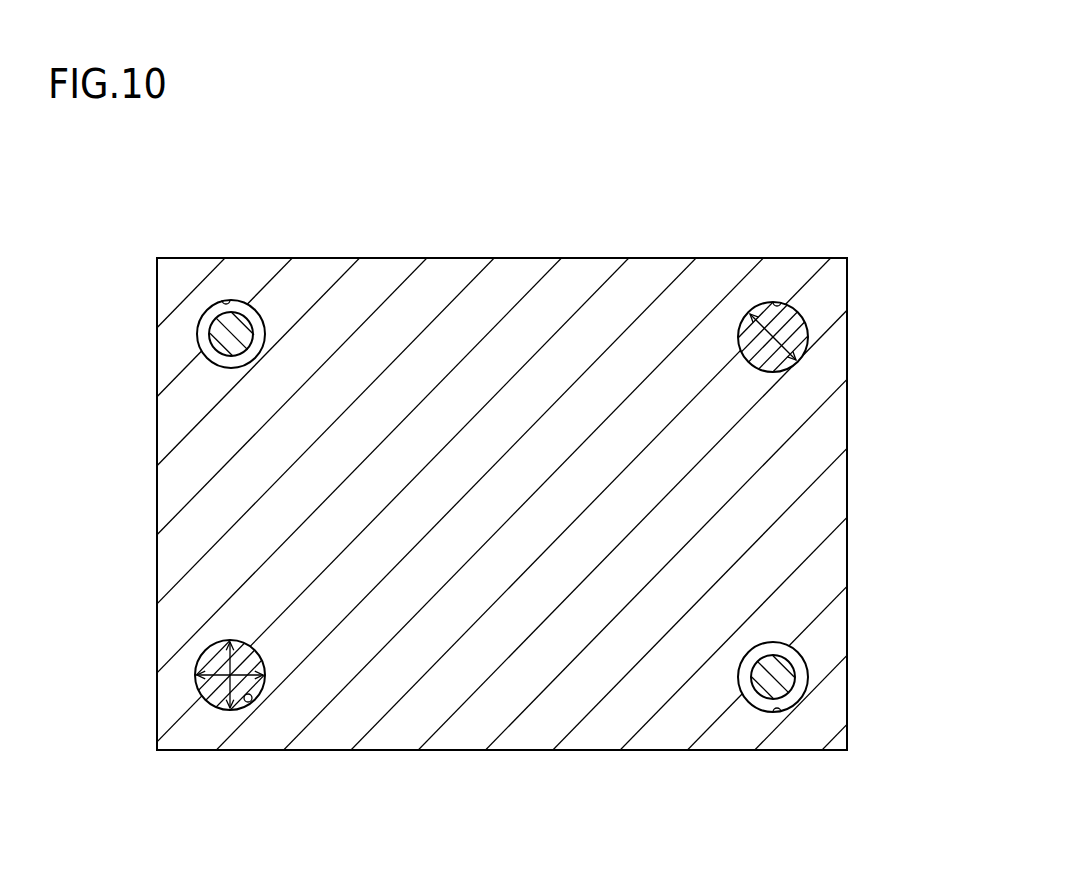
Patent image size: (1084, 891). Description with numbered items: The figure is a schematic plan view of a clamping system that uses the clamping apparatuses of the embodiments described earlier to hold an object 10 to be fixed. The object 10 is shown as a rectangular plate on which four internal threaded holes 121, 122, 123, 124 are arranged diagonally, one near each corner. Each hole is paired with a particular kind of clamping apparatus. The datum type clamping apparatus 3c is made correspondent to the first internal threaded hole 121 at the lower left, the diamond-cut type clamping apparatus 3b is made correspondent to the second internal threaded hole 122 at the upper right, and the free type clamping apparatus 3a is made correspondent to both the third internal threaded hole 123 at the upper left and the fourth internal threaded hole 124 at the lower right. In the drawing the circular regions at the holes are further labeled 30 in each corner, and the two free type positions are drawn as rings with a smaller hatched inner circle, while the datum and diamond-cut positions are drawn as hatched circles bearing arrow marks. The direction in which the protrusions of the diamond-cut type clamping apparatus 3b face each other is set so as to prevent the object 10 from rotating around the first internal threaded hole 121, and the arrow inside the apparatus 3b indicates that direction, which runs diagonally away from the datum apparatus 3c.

The object to be fixed 10 is at (832, 472).
The free type clamping apparatus 3a is at (183, 307).
The diamond-cut type clamping apparatus 3b is at (818, 310).
The datum type clamping apparatus 3c is at (183, 648).
The hole 30 is at (208, 339).
The first internal threaded hole 121 is at (243, 707).
The second internal threaded hole 122 is at (777, 304).
The third internal threaded hole 123 is at (220, 301).
The fourth internal threaded hole 124 is at (785, 712).